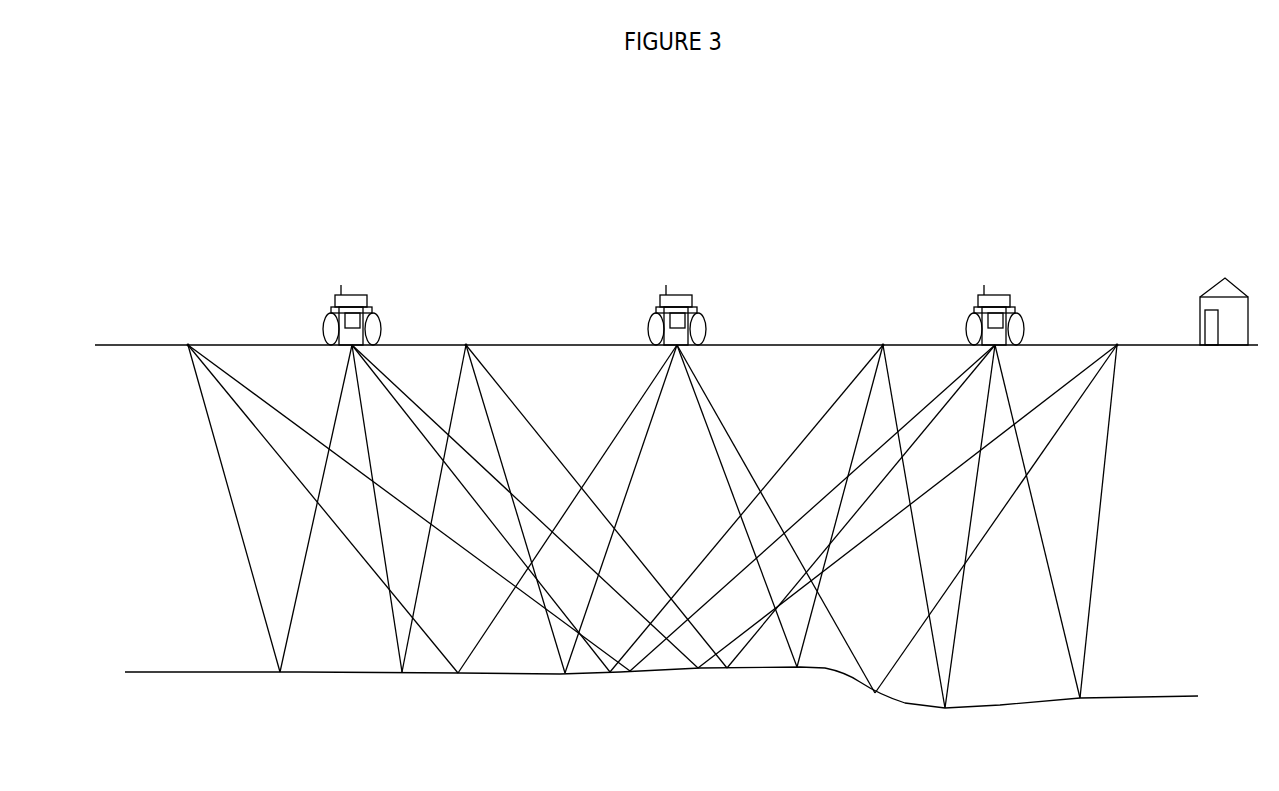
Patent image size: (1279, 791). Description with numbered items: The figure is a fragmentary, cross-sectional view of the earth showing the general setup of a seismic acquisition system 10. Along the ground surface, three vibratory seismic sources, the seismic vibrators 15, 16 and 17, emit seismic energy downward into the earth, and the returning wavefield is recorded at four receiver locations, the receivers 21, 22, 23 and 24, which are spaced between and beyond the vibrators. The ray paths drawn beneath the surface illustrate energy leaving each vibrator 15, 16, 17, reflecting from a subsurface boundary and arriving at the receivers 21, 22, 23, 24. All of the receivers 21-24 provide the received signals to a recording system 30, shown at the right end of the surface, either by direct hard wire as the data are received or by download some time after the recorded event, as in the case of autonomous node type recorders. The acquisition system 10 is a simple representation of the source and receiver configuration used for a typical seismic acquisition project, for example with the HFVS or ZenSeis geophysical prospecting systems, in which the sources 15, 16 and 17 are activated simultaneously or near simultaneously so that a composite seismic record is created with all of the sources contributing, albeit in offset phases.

The seismic acquisition system 10 is at (1165, 136).
The seismic vibrator 15 is at (356, 297).
The seismic vibrator 16 is at (682, 297).
The seismic vibrator 17 is at (999, 297).
The receiver 21 is at (189, 345).
The receiver 22 is at (466, 345).
The receiver 23 is at (883, 345).
The receiver 24 is at (1117, 345).
The recording system 30 is at (1214, 283).